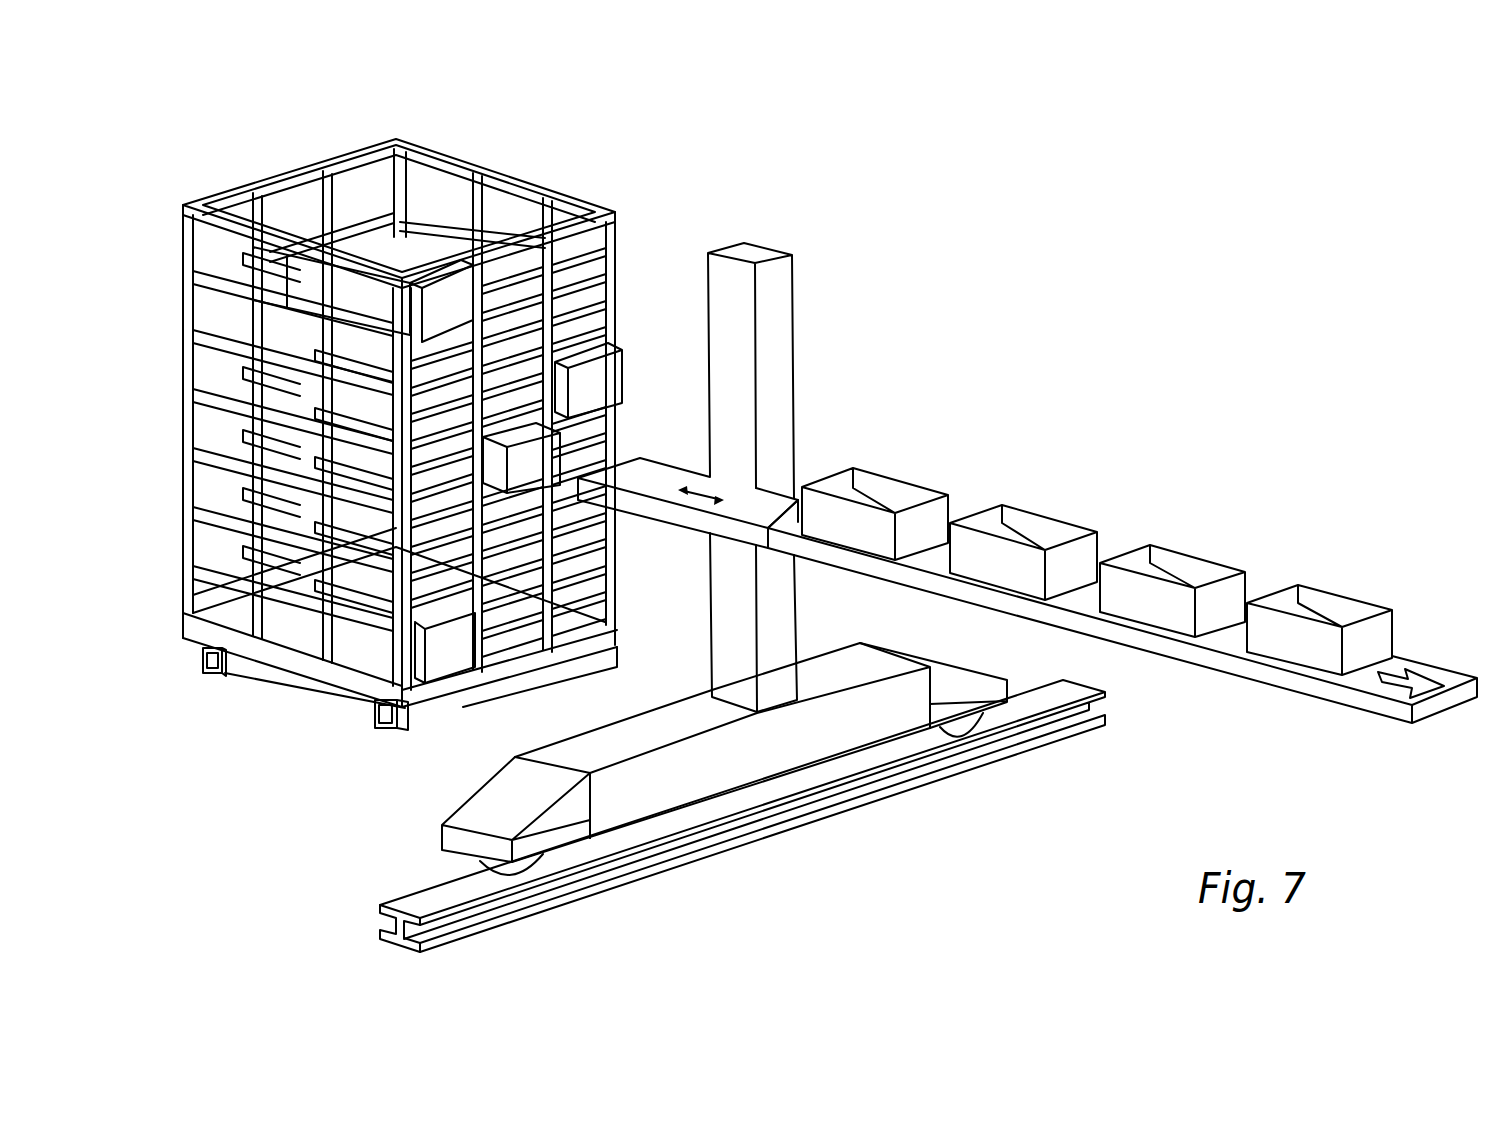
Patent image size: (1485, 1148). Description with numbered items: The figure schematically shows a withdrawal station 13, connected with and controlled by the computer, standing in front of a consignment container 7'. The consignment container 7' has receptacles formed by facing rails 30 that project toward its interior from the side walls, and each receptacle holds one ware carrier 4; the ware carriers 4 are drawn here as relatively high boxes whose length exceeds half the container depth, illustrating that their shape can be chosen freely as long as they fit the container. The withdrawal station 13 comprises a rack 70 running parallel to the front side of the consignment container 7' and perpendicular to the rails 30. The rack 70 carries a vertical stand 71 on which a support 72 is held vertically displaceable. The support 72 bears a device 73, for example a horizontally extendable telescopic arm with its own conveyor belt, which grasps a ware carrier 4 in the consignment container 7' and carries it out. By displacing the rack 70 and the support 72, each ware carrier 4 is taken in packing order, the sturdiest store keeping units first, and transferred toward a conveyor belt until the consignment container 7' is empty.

The consignment container 7' is at (400, 426).
The ware carrier 4 is at (463, 305).
The withdrawal station 13 is at (928, 592).
The rails 30 is at (253, 490).
The rack 70 is at (803, 752).
The vertical stand 71 is at (784, 338).
The support 72 is at (677, 517).
The device 73 is at (761, 504).